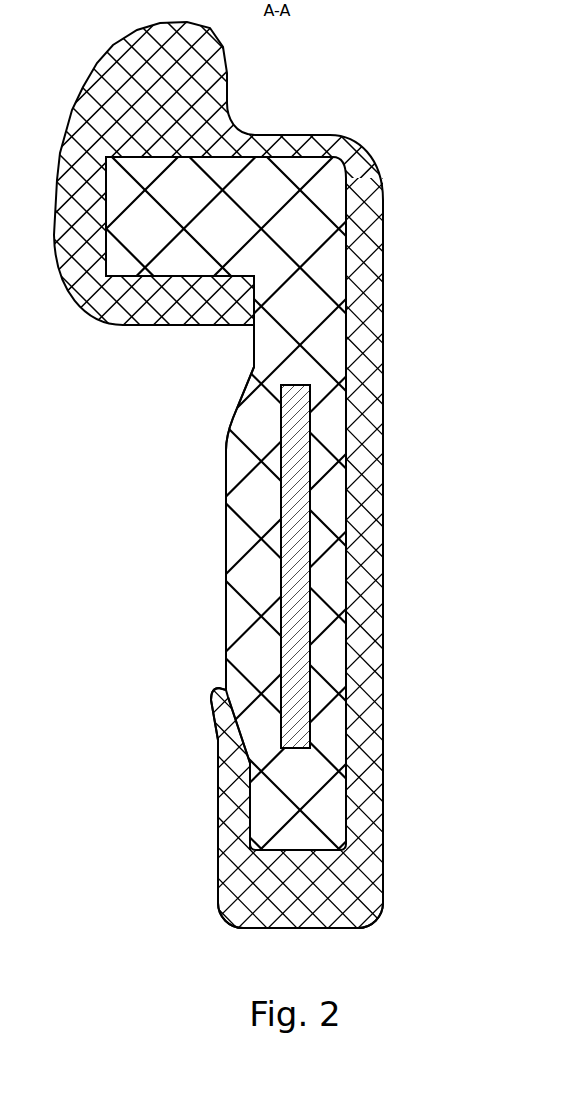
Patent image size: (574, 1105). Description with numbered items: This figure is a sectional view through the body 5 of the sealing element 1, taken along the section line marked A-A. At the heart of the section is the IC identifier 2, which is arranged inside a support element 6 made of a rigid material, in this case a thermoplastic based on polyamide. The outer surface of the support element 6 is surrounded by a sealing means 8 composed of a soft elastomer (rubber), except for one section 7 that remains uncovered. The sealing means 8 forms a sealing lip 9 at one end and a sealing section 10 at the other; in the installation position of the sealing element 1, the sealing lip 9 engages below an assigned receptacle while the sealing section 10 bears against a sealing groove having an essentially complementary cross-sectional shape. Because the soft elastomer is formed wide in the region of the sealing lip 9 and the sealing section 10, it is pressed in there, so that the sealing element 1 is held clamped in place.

The sealing element 1 is at (405, 180).
The IC identifier 2 is at (300, 444).
The body 5 is at (365, 512).
The support element 6 is at (330, 303).
The section 7 is at (226, 532).
The sealing means 8 is at (332, 907).
The sealing lip 9 is at (200, 80).
The sealing section 10 is at (307, 928).